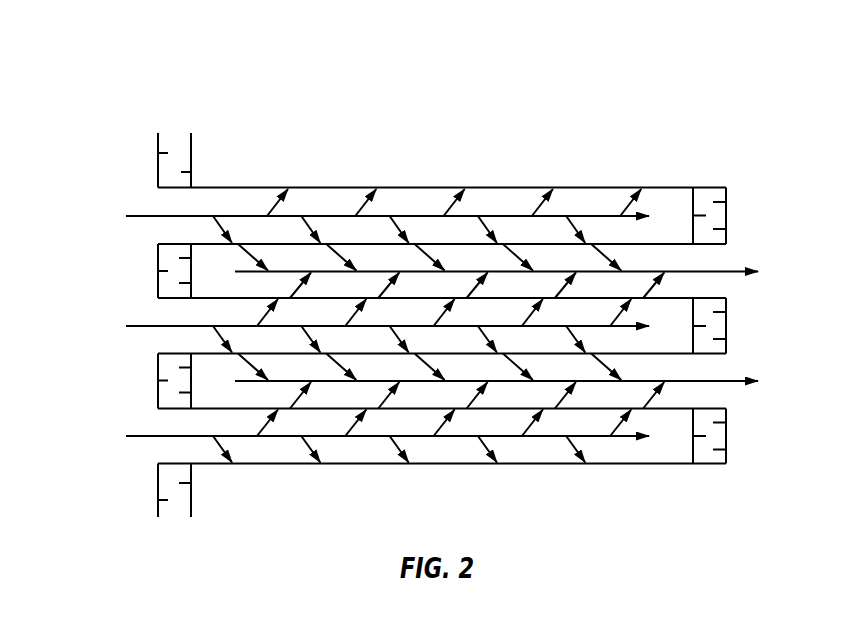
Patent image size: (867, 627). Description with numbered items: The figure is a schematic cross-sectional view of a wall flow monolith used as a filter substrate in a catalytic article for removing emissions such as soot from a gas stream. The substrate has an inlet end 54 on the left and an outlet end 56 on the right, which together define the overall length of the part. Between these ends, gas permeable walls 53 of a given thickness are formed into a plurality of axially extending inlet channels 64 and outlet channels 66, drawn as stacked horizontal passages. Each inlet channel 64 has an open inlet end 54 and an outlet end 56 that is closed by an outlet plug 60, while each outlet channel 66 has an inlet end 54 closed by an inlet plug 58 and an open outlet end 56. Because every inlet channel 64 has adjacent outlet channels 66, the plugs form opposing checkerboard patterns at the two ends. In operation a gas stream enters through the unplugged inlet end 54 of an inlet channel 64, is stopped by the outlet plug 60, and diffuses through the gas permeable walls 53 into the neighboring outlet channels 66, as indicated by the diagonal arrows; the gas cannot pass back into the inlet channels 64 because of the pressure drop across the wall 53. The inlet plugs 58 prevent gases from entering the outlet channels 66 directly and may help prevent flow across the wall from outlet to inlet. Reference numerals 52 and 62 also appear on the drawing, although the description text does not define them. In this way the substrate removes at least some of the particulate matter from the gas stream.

The plate 52 is at (212, 254).
The gas permeable walls 53 is at (438, 245).
The inlet end 54 is at (134, 118).
The outlet end 56 is at (750, 168).
The inlet plug 58 is at (166, 168).
The outlet plug 60 is at (727, 218).
The inlet 62 is at (247, 216).
The inlet channels 64 is at (179, 432).
The outlet channels 66 is at (719, 405).